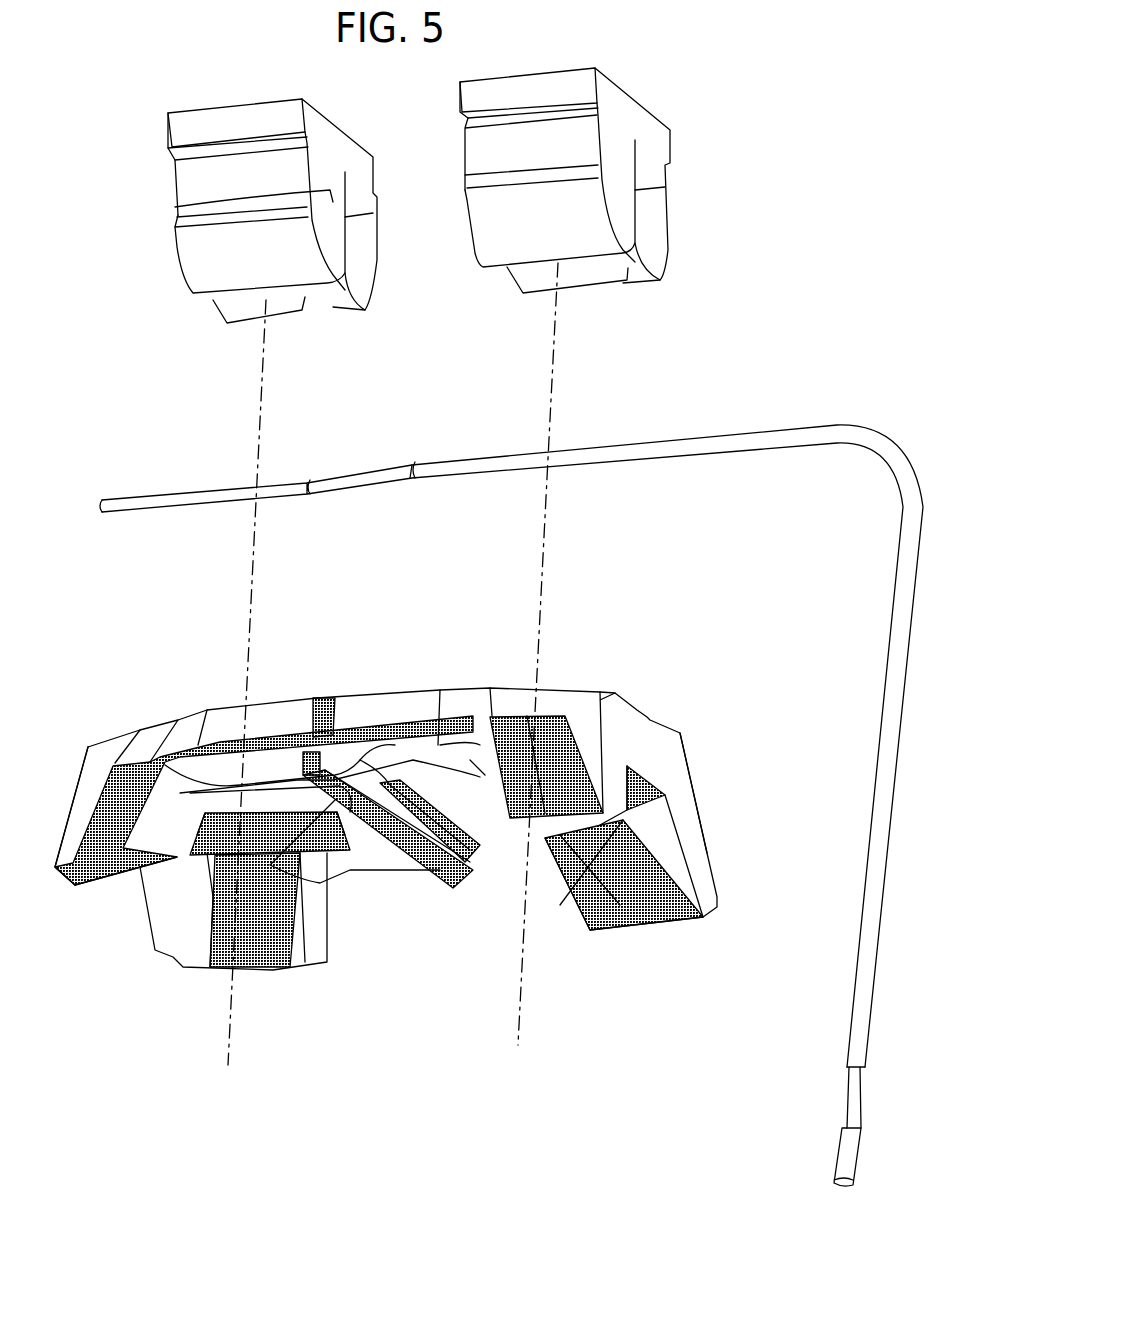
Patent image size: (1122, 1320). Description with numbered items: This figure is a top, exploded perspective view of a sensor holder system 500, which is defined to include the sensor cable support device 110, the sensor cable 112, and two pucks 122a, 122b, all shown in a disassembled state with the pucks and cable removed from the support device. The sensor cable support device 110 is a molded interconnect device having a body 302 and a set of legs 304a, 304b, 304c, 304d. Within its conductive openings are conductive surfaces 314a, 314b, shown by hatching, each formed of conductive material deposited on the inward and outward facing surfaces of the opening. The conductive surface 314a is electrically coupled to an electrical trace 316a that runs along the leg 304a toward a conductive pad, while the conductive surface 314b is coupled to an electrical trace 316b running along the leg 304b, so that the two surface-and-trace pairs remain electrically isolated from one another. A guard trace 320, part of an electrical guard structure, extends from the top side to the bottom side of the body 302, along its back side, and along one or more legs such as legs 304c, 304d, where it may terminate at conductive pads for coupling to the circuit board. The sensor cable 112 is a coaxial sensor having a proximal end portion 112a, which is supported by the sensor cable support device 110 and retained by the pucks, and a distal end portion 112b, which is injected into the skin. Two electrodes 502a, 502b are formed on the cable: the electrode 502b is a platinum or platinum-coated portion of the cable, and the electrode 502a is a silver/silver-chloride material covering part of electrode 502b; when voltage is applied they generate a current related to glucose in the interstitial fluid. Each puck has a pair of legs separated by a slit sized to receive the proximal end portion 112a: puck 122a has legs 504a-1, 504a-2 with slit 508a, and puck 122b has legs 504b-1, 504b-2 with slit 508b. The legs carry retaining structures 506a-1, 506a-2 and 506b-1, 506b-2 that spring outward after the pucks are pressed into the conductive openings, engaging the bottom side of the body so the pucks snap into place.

The sensor holder system 500 is at (805, 190).
The puck 122b is at (180, 128).
The puck 122a is at (622, 106).
The leg 504b-1 is at (333, 202).
The leg 504b-2 is at (362, 233).
The retaining structure 506b-1 is at (195, 265).
The retaining structure 506b-2 is at (225, 315).
The slit 508b is at (372, 213).
The leg 504a-1 is at (615, 170).
The leg 504a-2 is at (657, 205).
The retaining structure 506a-1 is at (585, 230).
The retaining structure 506a-2 is at (625, 282).
The slit 508a is at (637, 192).
The sensor cable 112 is at (862, 428).
The proximal end portion 112a is at (375, 440).
The distal end portion 112b is at (815, 1168).
The electrode 502a is at (597, 452).
The electrode 502b is at (180, 494).
The sensor cable support device 110 is at (417, 817).
The body 302 is at (380, 710).
The guard trace 320 is at (105, 780).
The leg 304a is at (700, 870).
The leg 304b is at (165, 930).
The leg 304c is at (75, 870).
The leg 304d is at (660, 822).
The conductive surface 314a is at (480, 870).
The conductive surface 314b is at (365, 870).
The electrical trace 316a is at (625, 920).
The electrical trace 316b is at (258, 955).